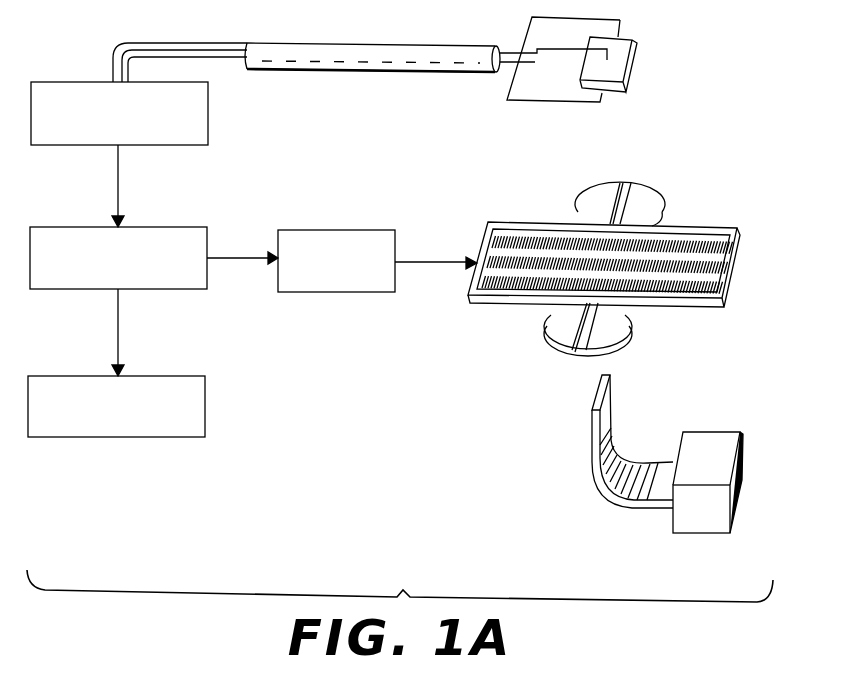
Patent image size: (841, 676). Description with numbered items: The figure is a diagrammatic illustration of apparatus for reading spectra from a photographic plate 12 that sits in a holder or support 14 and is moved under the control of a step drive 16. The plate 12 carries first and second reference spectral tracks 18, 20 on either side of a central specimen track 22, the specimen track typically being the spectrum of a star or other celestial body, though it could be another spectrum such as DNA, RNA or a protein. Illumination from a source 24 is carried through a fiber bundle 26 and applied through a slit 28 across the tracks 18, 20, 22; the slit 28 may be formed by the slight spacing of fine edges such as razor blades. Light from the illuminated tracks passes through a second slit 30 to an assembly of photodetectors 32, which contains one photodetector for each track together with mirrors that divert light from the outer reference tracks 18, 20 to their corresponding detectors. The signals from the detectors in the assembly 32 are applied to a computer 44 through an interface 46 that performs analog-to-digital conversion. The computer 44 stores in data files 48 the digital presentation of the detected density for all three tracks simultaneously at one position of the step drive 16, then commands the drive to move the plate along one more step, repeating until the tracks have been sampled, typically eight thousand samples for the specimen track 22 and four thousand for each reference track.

The photographic plate 12 is at (729, 247).
The holder or support 14 is at (741, 237).
The step drive 16 is at (352, 230).
The first reference spectral track 18 is at (667, 242).
The second reference spectral track 20 is at (680, 285).
The central specimen track 22 is at (705, 267).
The source 24 is at (712, 433).
The fiber bundle 26 is at (632, 460).
The slit 28 is at (620, 330).
The second slit 30 is at (647, 195).
The assembly of photodetectors 32 is at (623, 43).
The computer 44 is at (182, 227).
The interface 46 is at (208, 113).
The data files 48 is at (158, 376).